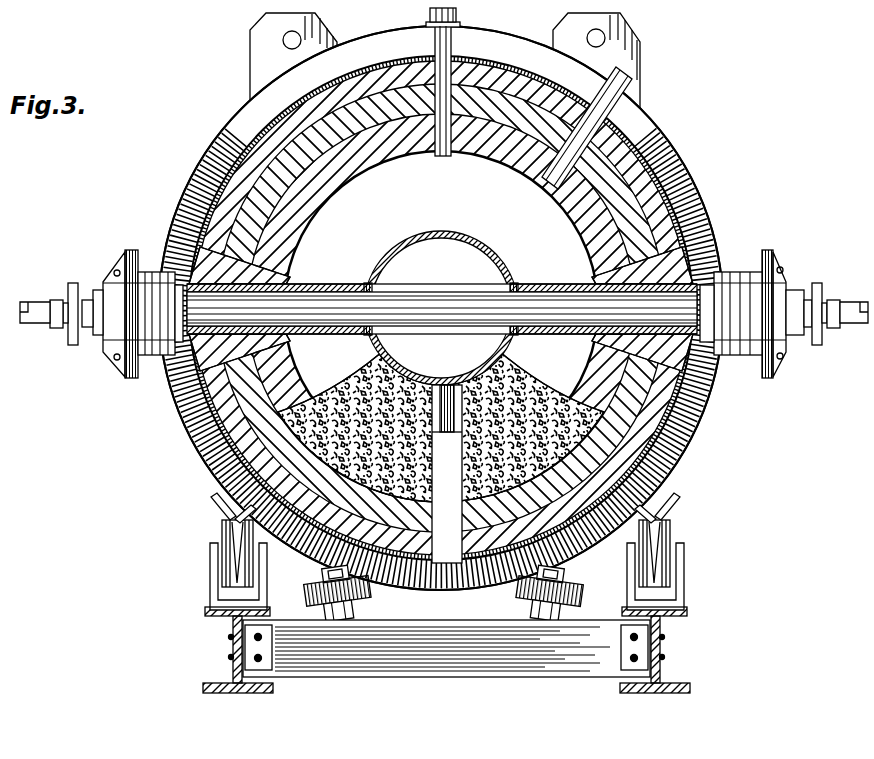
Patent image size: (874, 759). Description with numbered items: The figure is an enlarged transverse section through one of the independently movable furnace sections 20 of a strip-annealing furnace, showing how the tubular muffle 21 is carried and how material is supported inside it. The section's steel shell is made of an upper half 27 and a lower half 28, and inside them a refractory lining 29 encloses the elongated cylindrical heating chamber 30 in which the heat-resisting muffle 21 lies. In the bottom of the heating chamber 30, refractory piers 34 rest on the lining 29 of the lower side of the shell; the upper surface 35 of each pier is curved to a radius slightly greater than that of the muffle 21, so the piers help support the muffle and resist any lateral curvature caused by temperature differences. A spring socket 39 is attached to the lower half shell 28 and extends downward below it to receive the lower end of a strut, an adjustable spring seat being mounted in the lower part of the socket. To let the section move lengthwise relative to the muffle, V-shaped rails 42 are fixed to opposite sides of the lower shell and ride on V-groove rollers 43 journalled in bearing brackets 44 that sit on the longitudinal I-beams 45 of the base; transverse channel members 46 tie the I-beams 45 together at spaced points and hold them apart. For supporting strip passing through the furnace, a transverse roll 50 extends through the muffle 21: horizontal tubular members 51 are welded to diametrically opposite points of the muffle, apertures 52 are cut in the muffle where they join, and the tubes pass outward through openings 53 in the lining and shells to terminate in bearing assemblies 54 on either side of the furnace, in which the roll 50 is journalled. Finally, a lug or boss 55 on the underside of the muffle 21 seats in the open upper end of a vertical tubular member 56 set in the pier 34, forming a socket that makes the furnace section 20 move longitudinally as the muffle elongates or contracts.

The furnace section 20 is at (645, 135).
The tubular muffle 21 is at (472, 236).
The steel shell upper half 27 is at (678, 200).
The steel shell lower half 28 is at (688, 422).
The refractory lining 29 is at (391, 160).
The heating chamber 30 is at (441, 379).
The refractory pier 34 is at (536, 380).
The curved upper surface of pier 35 is at (378, 368).
The spring socket 39 is at (318, 605).
The rail 42 is at (214, 509).
The V-groove roller 43 is at (222, 532).
The bearing bracket 44 is at (213, 572).
The I-beam 45 is at (230, 623).
The channel member 46 is at (432, 623).
The roll 50 is at (471, 327).
The tubular member 51 is at (345, 289).
The aperture 52 is at (377, 293).
The opening 53 is at (294, 280).
The bearing assembly 54 is at (133, 262).
The lug or boss 55 is at (449, 395).
The vertical tubular member 56 is at (440, 395).